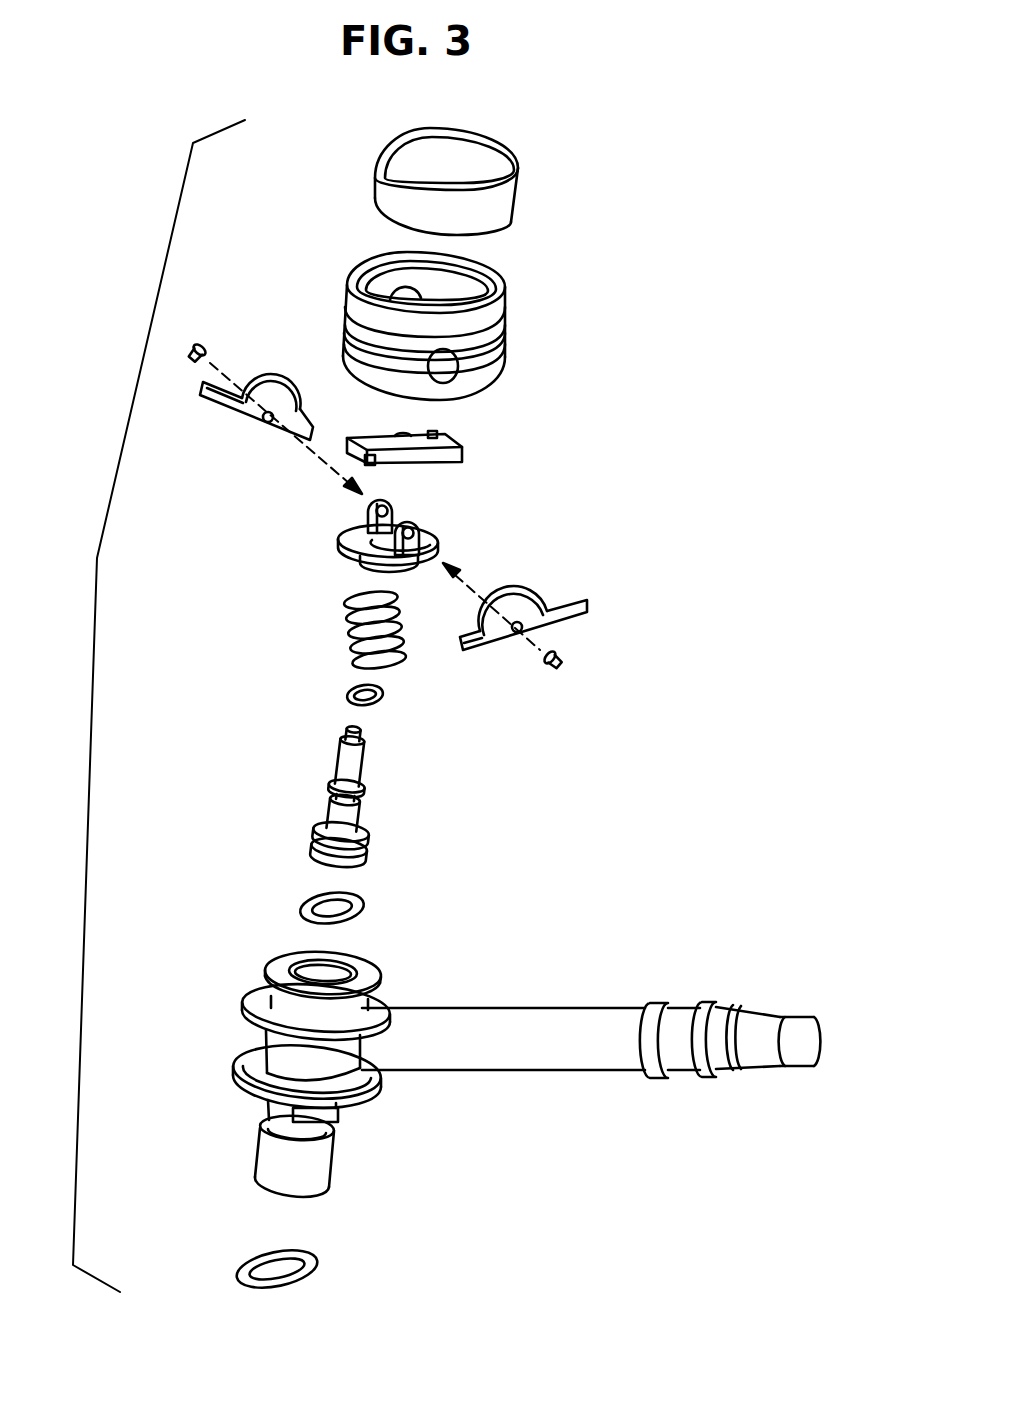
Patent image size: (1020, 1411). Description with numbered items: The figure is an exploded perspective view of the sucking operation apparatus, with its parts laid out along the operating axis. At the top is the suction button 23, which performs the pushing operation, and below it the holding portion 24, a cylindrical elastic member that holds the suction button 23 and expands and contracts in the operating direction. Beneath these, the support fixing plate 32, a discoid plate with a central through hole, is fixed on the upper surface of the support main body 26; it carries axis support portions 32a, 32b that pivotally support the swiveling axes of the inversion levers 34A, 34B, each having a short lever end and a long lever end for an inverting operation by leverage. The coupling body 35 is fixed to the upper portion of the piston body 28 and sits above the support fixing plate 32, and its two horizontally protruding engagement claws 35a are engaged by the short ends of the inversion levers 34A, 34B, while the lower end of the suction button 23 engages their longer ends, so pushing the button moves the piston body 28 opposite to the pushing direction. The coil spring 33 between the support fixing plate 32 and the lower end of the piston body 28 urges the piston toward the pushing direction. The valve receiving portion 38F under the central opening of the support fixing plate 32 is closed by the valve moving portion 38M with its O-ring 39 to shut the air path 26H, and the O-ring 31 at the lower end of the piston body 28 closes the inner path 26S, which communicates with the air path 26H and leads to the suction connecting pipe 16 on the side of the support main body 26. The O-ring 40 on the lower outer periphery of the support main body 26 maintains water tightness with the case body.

The suction connecting pipe 16 is at (540, 1007).
The suction button 23 is at (519, 198).
The holding portion 24 is at (508, 333).
The support main body 26 is at (297, 1074).
The air path 26H is at (323, 973).
The inner path 26S is at (295, 1154).
The piston body 28 is at (396, 797).
The O-ring 31 is at (366, 912).
The support fixing plate 32 is at (396, 550).
The axis support portion 32a is at (368, 505).
The axis support portion 32b is at (419, 530).
The coil spring 33 is at (347, 626).
The inversion lever 34A is at (268, 382).
The inversion lever 34B is at (520, 590).
The coupling body 35 is at (392, 438).
The engagement claw 35a is at (437, 435).
The valve receiving portion 38F is at (370, 568).
The valve moving portion 38M is at (374, 787).
The O-ring 39 is at (346, 694).
The O-ring 40 is at (236, 1262).